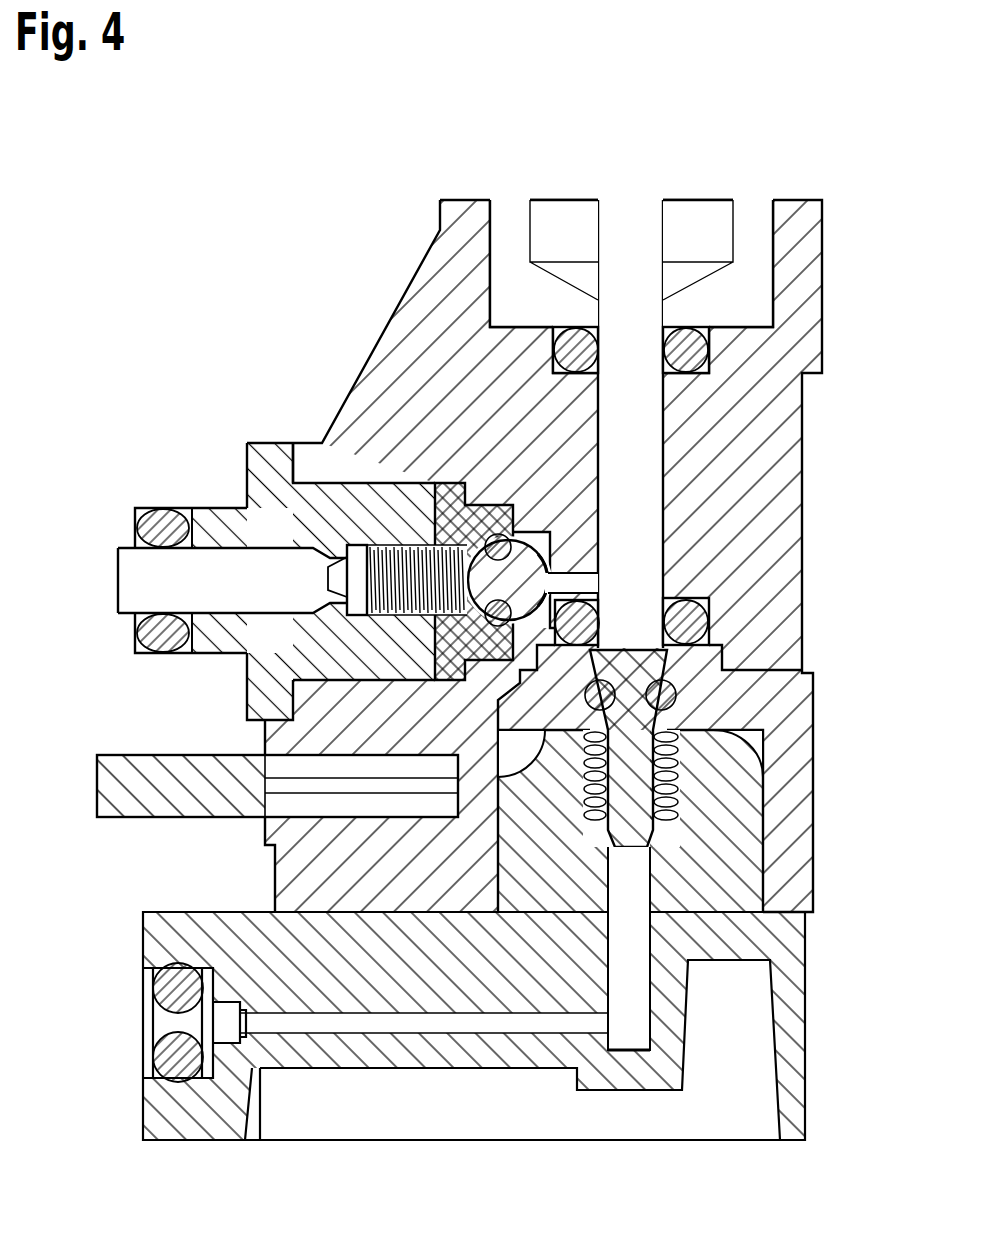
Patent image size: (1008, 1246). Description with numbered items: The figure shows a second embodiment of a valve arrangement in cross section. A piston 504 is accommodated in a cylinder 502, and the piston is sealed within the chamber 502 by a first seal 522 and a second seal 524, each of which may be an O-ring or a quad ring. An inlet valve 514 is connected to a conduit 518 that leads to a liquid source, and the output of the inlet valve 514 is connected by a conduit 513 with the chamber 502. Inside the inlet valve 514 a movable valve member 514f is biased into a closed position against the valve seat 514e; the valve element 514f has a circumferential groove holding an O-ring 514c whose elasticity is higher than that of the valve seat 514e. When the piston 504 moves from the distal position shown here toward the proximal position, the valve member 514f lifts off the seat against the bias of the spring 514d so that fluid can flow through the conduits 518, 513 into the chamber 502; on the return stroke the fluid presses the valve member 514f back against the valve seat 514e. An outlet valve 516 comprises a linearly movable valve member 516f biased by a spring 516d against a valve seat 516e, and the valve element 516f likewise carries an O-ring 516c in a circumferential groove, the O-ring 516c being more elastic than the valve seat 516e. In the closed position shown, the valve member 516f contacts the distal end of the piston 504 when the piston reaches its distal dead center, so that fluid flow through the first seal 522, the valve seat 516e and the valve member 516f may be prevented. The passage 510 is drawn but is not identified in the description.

The cylinder 502 is at (672, 442).
The piston 504 is at (640, 486).
The fluid passage 510 is at (580, 556).
The conduit 513 is at (562, 576).
The inlet valve 514 is at (437, 528).
The O-ring 514c is at (443, 663).
The spring 514d is at (445, 512).
The valve seat 514e is at (452, 682).
The movable valve member 514f is at (343, 583).
The outlet valve 516 is at (684, 775).
The O-ring 516c is at (678, 698).
The spring 516d is at (688, 803).
The valve seat 516e is at (640, 672).
The linearly movable valve member 516f is at (650, 829).
The conduit 518 is at (130, 583).
The first seal 522 is at (690, 624).
The second seal 524 is at (697, 352).